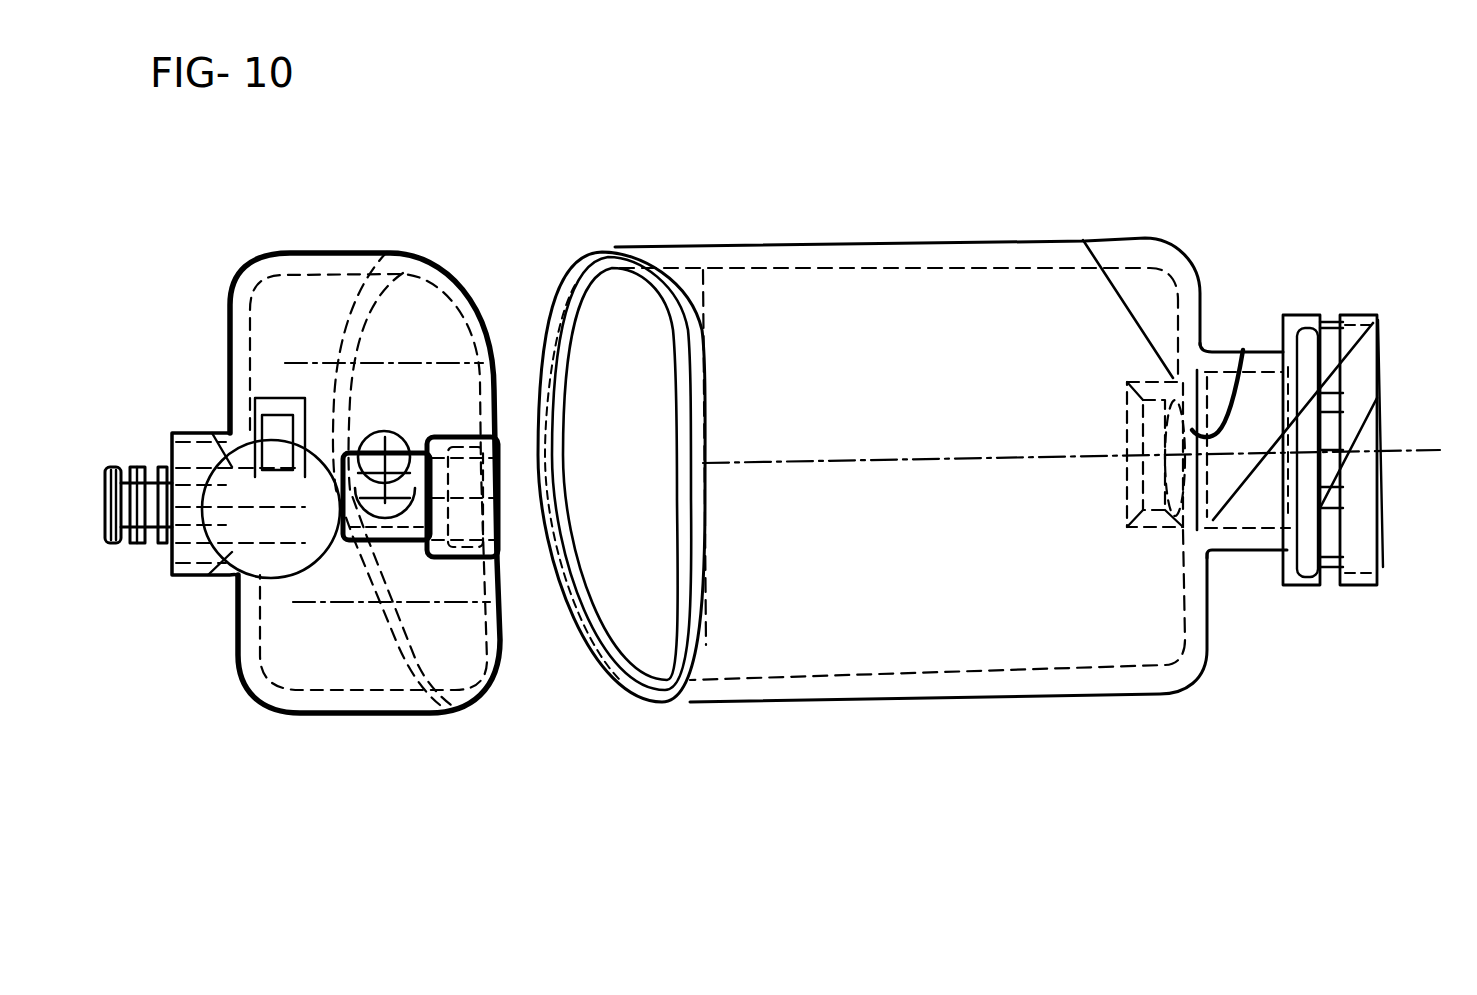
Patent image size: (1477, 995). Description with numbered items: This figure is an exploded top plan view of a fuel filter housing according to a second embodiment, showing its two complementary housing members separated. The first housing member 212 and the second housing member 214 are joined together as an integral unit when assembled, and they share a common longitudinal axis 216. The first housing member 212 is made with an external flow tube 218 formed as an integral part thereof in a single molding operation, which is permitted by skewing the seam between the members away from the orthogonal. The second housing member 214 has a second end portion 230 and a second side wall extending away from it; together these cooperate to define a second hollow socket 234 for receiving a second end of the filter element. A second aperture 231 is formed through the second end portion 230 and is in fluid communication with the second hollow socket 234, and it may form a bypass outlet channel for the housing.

The first housing member 212 is at (381, 222).
The second housing member 214 is at (937, 376).
The longitudinal axis 216 is at (1400, 455).
The external flow tube 218 is at (417, 567).
The second end portion 230 is at (1213, 603).
The second aperture 231 is at (1243, 335).
The second hollow socket 234 is at (604, 393).